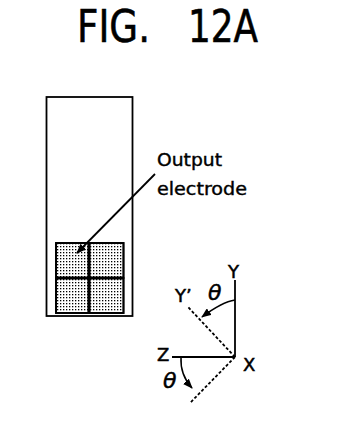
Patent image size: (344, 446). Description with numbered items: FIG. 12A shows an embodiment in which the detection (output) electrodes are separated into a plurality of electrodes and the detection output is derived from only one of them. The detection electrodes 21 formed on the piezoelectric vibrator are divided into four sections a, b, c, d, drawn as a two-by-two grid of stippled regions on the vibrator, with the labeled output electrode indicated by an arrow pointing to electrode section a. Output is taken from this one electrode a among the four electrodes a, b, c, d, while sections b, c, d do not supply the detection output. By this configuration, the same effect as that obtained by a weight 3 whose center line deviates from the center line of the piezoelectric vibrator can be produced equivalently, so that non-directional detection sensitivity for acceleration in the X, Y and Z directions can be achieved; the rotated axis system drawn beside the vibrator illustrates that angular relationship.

The weight 3 is at (46, 157).
The detection electrodes 21 is at (66, 291).
The electrode section a is at (72, 251).
The electrode section b is at (106, 251).
The electrode section c is at (72, 307).
The electrode section d is at (106, 307).